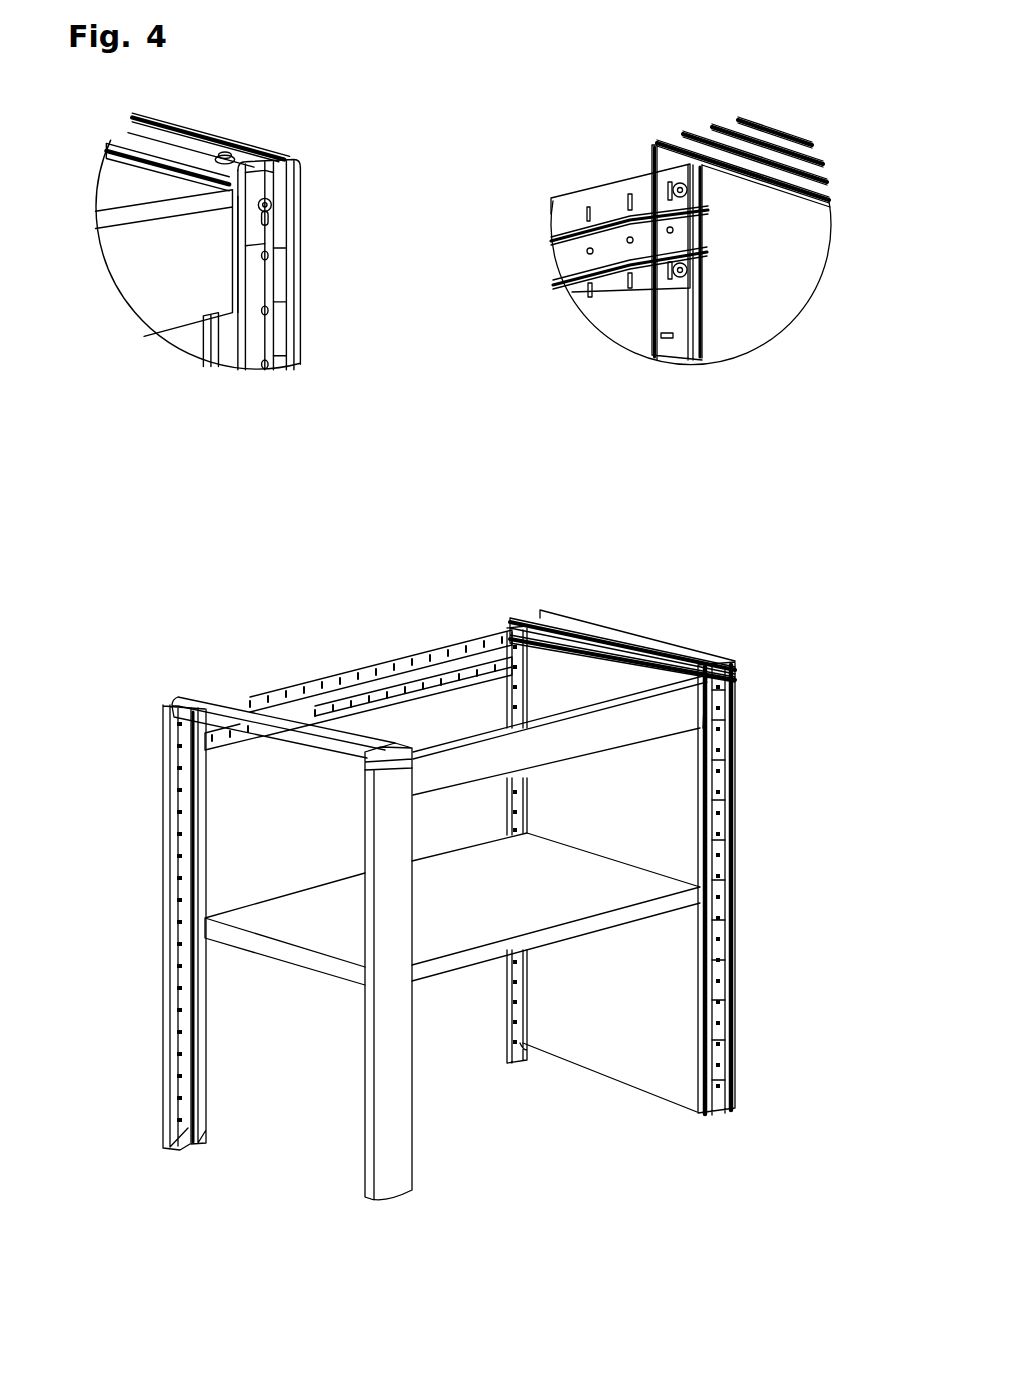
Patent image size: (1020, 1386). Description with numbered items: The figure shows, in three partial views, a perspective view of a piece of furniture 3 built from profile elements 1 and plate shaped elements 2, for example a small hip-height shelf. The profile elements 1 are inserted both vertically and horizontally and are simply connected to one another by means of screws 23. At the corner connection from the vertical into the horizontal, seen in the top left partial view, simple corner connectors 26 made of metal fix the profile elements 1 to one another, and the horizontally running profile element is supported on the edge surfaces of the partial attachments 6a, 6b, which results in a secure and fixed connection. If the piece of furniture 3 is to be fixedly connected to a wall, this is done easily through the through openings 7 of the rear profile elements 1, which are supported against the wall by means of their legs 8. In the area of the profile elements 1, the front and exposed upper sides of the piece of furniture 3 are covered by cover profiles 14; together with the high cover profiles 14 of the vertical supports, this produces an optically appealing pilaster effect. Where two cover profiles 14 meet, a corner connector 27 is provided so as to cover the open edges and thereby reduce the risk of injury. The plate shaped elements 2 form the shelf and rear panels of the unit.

The profile element 1 is at (165, 110).
The plate shaped element 2 is at (753, 287).
The piece of furniture 3 is at (490, 1138).
The partial attachment 6a is at (497, 647).
The partial attachment 6b is at (513, 677).
The through opening 7 is at (277, 337).
The leg 8 is at (205, 120).
The cover profile 14 is at (157, 273).
The screw 23 is at (247, 177).
The corner connector 26 is at (247, 150).
The corner connector 27 is at (390, 747).